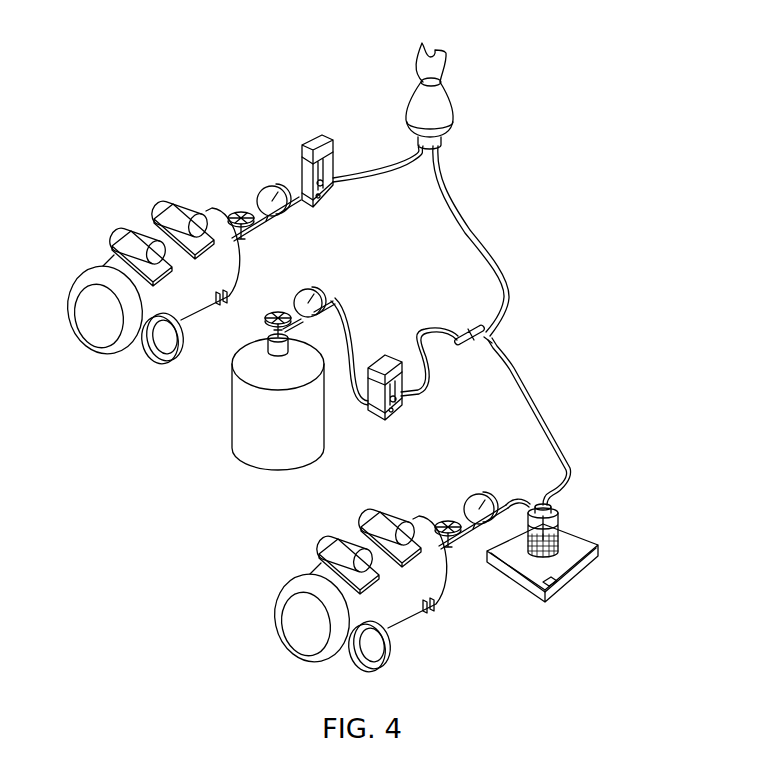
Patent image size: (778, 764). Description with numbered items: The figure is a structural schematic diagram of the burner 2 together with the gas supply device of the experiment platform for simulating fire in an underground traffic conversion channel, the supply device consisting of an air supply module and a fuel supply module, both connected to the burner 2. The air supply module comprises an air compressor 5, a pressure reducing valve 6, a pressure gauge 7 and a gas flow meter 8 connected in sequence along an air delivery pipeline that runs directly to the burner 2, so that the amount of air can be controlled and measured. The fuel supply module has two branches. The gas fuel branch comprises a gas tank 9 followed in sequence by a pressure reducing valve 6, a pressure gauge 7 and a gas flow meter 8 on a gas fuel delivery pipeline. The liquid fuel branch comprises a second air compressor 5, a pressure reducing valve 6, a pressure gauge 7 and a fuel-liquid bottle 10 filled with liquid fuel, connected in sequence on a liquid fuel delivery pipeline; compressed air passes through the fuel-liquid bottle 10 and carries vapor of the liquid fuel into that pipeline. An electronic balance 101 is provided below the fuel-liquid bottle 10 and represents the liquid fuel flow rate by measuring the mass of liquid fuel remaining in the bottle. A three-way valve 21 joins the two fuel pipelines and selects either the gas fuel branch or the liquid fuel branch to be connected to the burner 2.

The burner 2 is at (458, 98).
The air compressor 5 is at (117, 353).
The pressure reducing valve 6 is at (242, 198).
The pressure gauge 7 is at (314, 288).
The gas flow meter 8 is at (402, 384).
The gas tank 9 is at (226, 468).
The fuel-liquid bottle 10 is at (559, 520).
The electronic balance 101 is at (568, 580).
The three-way valve 21 is at (488, 336).